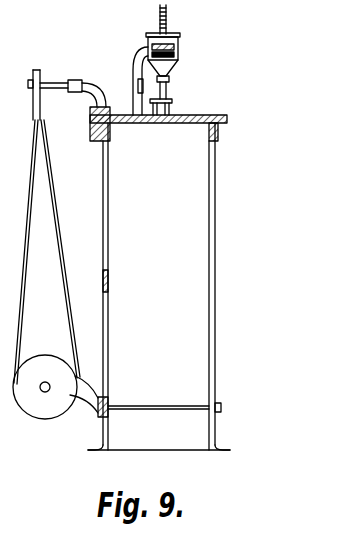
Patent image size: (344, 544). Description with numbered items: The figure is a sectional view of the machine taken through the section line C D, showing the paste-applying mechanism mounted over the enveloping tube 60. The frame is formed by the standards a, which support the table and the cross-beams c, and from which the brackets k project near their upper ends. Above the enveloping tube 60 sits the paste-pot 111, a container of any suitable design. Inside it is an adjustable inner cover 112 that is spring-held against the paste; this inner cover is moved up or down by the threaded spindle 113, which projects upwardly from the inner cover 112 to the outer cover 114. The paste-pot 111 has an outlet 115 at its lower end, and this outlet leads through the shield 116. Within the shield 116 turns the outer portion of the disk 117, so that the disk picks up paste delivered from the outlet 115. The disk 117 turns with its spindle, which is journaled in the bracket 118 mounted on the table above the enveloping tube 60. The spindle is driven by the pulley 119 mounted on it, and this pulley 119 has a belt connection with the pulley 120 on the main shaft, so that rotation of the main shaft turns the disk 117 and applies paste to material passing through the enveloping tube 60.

The enveloping tube 60 is at (166, 123).
The standards a is at (108, 234).
The cross-beams c is at (108, 283).
The section line C D C is at (108, 403).
The pulley 120 is at (55, 387).
The pulley 119 is at (40, 74).
The brackets k is at (88, 100).
The adjustable inner cover 112 is at (148, 48).
The bracket 118 is at (138, 86).
The threaded spindle 113 is at (166, 18).
The outer cover 114 is at (179, 35).
The paste-pot 111 is at (178, 43).
The outlet 115 is at (173, 68).
The shield 116 is at (169, 79).
The disk 117 is at (172, 101).